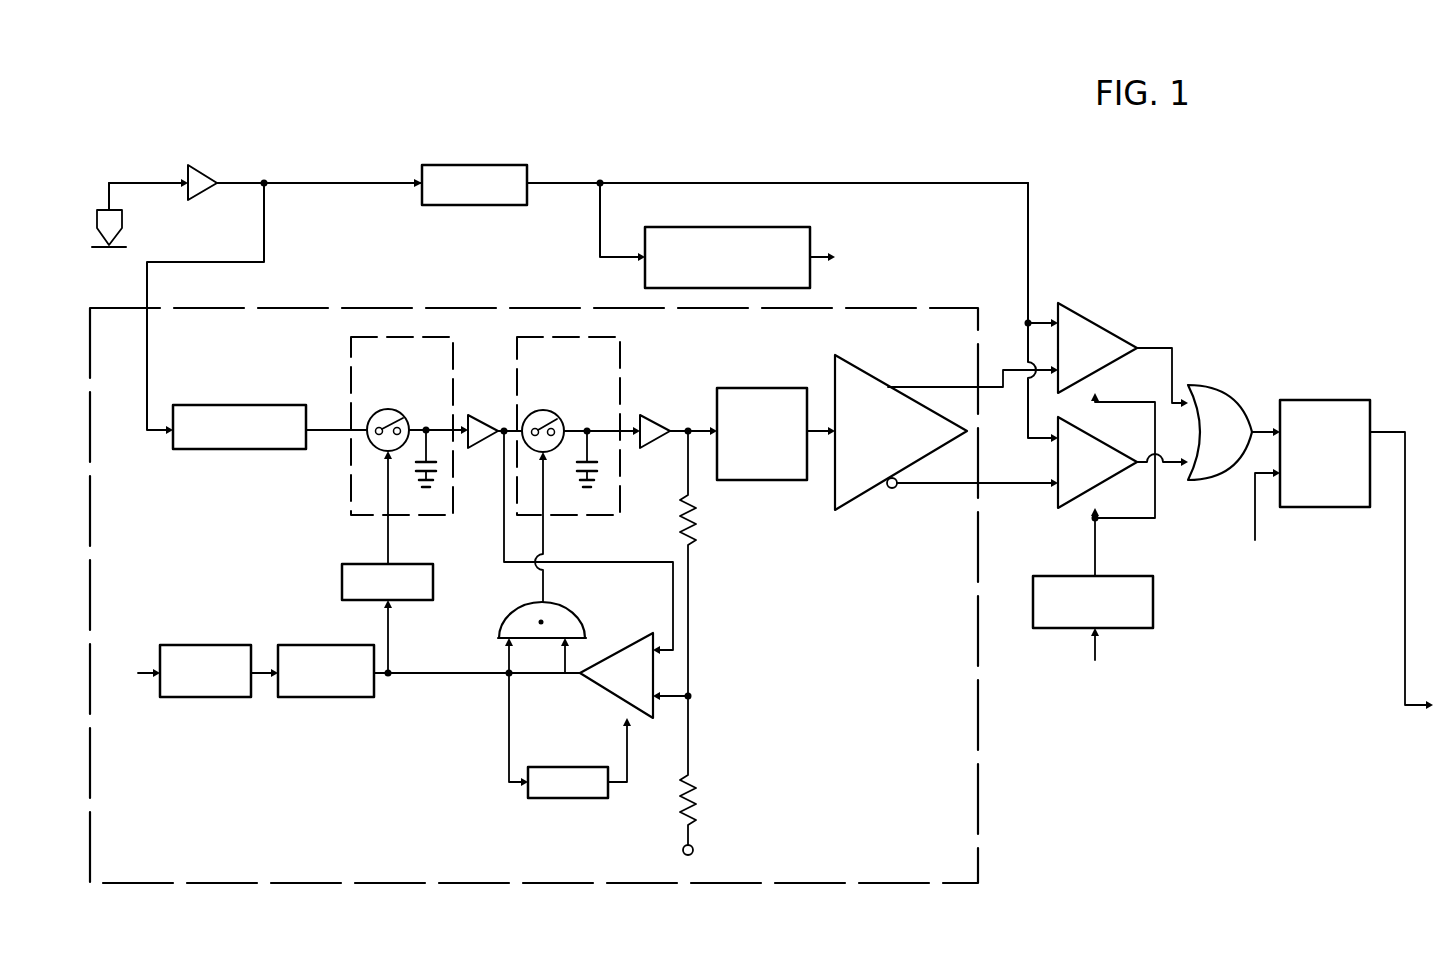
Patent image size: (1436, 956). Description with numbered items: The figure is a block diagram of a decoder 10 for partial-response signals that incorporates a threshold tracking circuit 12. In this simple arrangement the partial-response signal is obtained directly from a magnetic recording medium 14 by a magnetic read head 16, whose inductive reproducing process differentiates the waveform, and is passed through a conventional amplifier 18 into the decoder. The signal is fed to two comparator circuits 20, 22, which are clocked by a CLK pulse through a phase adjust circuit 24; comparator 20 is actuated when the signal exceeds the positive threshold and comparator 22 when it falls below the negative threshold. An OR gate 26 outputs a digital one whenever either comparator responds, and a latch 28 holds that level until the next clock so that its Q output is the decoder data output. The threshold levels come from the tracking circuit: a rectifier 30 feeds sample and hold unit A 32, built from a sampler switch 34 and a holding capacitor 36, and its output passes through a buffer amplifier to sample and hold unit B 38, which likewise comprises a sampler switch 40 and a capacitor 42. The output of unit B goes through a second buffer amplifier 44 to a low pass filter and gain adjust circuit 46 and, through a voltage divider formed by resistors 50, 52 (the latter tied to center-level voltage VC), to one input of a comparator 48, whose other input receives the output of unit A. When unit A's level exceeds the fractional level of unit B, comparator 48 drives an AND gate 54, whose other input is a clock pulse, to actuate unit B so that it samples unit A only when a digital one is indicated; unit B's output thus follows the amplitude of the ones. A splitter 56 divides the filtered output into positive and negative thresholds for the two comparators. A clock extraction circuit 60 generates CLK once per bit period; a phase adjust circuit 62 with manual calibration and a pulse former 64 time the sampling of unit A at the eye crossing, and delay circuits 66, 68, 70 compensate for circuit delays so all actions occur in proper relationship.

The decoder 10 is at (793, 175).
The threshold tracking circuit 12 is at (534, 595).
The magnetic recording medium 14 is at (118, 246).
The magnetic read head 16 is at (120, 219).
The amplifier 18 is at (206, 150).
The comparator 20 is at (1072, 303).
The comparator 22 is at (1089, 417).
The phase adjust circuit 24 is at (1110, 576).
The OR gate 26 is at (1248, 370).
The latch 28 is at (1322, 400).
The rectifier 30 is at (261, 405).
The sample and hold unit A 32 is at (350, 372).
The sampler switch 34 is at (418, 413).
The capacitor 36 is at (417, 468).
The sample and hold unit B 38 is at (516, 372).
The sampler switch 40 is at (585, 429).
The capacitor 42 is at (578, 462).
The second buffer amplifier 44 is at (676, 397).
The low pass filter and gain adjust circuit 46 is at (754, 388).
The comparator 48 is at (600, 652).
The resistor 50 is at (697, 517).
The resistor 52 is at (694, 800).
The AND gate 54 is at (523, 606).
The splitter 56 is at (846, 364).
The clock extraction circuit 60 is at (771, 227).
The phase adjust circuit 62 is at (209, 645).
The pulse former 64 is at (306, 645).
The delay circuit 66 is at (485, 165).
The delay circuit 68 is at (343, 564).
The delay circuit 70 is at (555, 802).